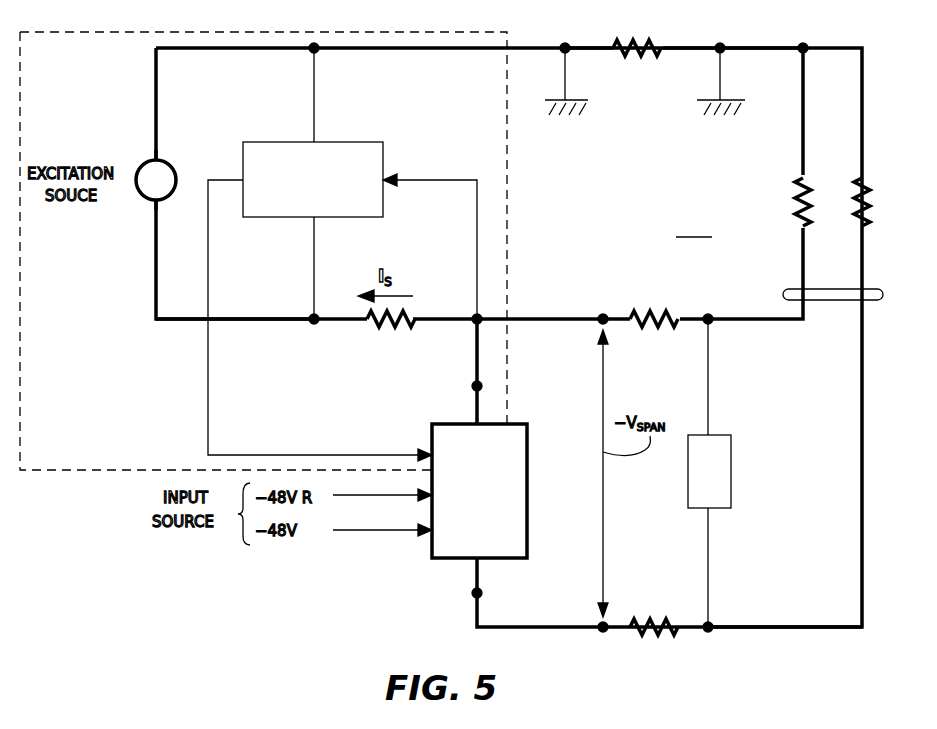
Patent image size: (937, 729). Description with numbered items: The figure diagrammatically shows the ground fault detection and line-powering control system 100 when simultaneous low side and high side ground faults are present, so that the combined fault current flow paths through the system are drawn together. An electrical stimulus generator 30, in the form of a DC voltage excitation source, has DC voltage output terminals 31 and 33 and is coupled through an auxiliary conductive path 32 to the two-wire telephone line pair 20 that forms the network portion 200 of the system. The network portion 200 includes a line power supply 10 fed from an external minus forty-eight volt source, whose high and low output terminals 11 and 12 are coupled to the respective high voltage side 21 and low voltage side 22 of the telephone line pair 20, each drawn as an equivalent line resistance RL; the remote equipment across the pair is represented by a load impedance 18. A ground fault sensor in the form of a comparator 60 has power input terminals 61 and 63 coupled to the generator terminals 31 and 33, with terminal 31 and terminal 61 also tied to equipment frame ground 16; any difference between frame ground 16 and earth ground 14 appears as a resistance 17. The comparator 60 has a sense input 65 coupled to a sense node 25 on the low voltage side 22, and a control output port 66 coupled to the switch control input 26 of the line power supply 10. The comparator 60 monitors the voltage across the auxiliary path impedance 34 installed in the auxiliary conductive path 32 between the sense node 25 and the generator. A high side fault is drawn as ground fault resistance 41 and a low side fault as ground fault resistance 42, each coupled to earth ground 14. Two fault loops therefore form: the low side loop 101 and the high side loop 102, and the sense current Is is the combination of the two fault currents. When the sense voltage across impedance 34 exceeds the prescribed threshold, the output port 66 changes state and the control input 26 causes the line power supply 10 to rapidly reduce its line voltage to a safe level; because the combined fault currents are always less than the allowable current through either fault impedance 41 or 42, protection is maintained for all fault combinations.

The ground fault detection and line-powering control system 100 is at (27, 473).
The principal sense current loop 101 is at (700, 62).
The sense current loop 102 is at (790, 600).
The electrical stimulus generator 30 is at (160, 160).
The DC voltage output terminal 31 is at (150, 148).
The DC voltage output terminal 33 is at (150, 212).
The comparator 60 is at (340, 142).
The power input terminal 61 is at (314, 140).
The power input terminal 63 is at (314, 222).
The sense input 65 is at (386, 172).
The control output port 66 is at (243, 178).
The auxiliary conductive path 32 is at (233, 318).
The auxiliary path impedance 34 is at (376, 326).
The sense node 25 is at (477, 316).
The low output terminal 12 is at (474, 382).
The high output terminal 11 is at (482, 593).
The line power supply 10 is at (527, 468).
The switch control input 26 is at (432, 455).
The equipment frame ground 16 is at (590, 108).
The earth ground 14 is at (747, 108).
The resistance 17 is at (645, 56).
The network portion 200 is at (694, 226).
The ground fault resistance 42 is at (798, 200).
The ground fault resistance 41 is at (855, 182).
The telephone line pair 20 is at (830, 300).
The low voltage side 22 is at (650, 327).
The load impedance 18 is at (731, 438).
The high voltage side 21 is at (670, 620).